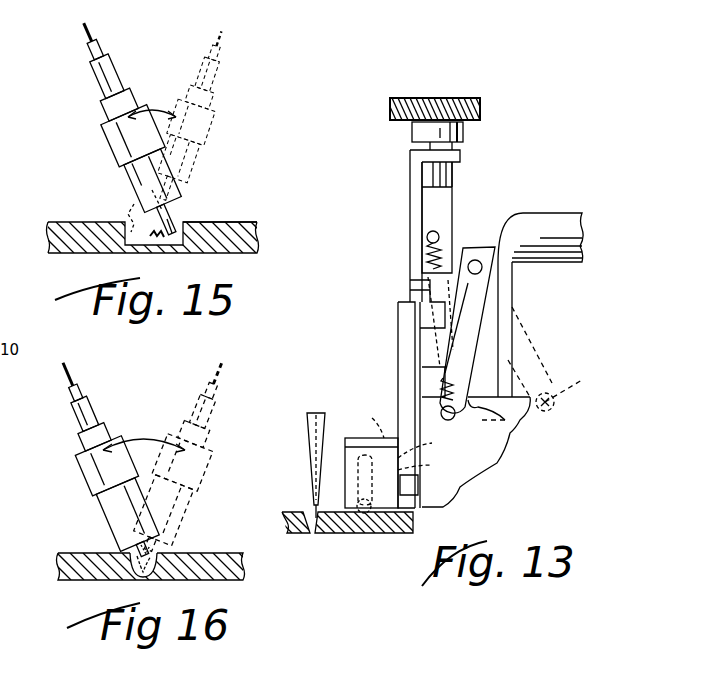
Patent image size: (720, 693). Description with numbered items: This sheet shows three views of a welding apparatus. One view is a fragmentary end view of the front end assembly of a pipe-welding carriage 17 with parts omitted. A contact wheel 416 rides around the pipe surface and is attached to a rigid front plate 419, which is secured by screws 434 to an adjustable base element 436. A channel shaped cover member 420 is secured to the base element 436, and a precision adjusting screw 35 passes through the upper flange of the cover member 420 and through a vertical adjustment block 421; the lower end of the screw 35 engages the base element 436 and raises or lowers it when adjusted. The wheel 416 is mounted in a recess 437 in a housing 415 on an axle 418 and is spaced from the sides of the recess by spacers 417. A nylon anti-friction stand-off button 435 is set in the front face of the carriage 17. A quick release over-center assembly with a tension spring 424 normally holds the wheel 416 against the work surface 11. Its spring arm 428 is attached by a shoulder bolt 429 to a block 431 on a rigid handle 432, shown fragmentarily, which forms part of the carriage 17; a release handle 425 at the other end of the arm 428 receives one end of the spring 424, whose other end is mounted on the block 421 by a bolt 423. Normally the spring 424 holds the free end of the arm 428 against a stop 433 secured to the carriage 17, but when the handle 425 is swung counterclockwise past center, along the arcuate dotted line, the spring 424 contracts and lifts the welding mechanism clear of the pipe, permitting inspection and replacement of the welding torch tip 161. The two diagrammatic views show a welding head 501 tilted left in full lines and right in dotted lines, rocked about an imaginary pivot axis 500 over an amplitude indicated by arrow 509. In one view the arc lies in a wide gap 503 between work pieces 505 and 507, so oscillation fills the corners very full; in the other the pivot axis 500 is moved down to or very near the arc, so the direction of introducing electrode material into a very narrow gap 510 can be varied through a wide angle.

In FIG. 15, the pivot axis 500 is at (152, 185).
In FIG. 16, the pivot axis 500 is at (149, 552).
In FIG. 15, the welding head 501 is at (106, 135).
In FIG. 16, the welding head 501 is at (96, 485).
In FIG. 15, the gap 503 is at (130, 222).
In FIG. 15, the work piece 505 is at (72, 222).
In FIG. 15, the work piece 507 is at (205, 222).
In FIG. 15, the arrow 509 is at (166, 106).
In FIG. 16, the arrow 509 is at (151, 442).
In FIG. 16, the gap 510 is at (118, 571).
In FIG. 13, the precision adjusting screw 35 is at (450, 180).
In FIG. 13, the channel shaped cover member 420 is at (410, 180).
In FIG. 13, the vertical adjustment block 421 is at (450, 196).
In FIG. 13, the bolt 423 is at (427, 236).
In FIG. 13, the tension spring 424 is at (410, 290).
In FIG. 13, the release handle 425 is at (525, 410).
In FIG. 13, the spring arm 428 is at (497, 298).
In FIG. 13, the shoulder bolt 429 is at (475, 259).
In FIG. 13, the block 431 is at (513, 265).
In FIG. 13, the rigid handle 432 is at (540, 213).
In FIG. 13, the stop 433 is at (422, 375).
In FIG. 13, the screws 434 is at (402, 318).
In FIG. 13, the stand-off button 435 is at (463, 428).
In FIG. 13, the adjustable base element 436 is at (410, 272).
In FIG. 13, the housing 415 is at (371, 438).
In FIG. 13, the contact wheel 416 is at (427, 447).
In FIG. 13, the spacers 417 is at (359, 543).
In FIG. 13, the axle 418 is at (427, 466).
In FIG. 13, the rigid front plate 419 is at (400, 350).
In FIG. 13, the recess 437 is at (385, 460).
In FIG. 13, the welding torch tip 161 is at (310, 465).
In FIG. 13, the carriage 17 is at (445, 490).
In FIG. 13, the work surface 11 is at (380, 533).